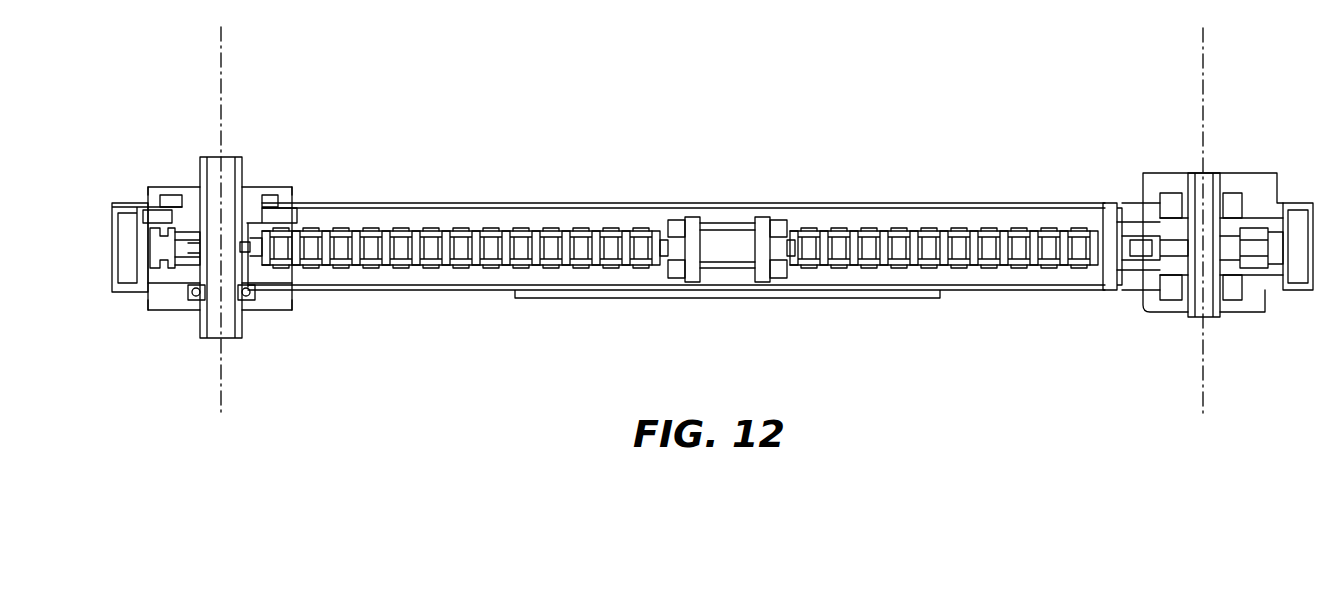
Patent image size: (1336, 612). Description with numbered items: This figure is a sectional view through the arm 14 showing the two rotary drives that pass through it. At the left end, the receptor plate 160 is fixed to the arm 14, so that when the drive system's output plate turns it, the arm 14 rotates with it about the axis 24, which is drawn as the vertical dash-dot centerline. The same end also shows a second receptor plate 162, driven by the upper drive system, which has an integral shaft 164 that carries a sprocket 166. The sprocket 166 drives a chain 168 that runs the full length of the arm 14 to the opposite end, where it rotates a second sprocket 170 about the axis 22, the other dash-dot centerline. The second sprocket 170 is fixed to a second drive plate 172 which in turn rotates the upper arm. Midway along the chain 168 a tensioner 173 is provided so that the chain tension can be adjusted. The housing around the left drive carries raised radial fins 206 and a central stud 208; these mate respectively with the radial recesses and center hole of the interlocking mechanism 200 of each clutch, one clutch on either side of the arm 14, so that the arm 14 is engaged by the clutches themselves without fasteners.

The interlocking mechanism 200 is at (350, 90).
The arm 14 is at (807, 202).
The chain 168 is at (440, 237).
The tensioner 173 is at (733, 243).
The receptor plate 160 is at (258, 310).
The raised radial fins 206 is at (158, 185).
The stud 208 is at (237, 157).
The receptor plate 162 is at (180, 185).
The shaft 164 is at (202, 273).
The sprocket 166 is at (178, 247).
The axis 24 is at (222, 387).
The axis 22 is at (1202, 95).
The second drive plate 172 is at (1217, 173).
The second sprocket 170 is at (1237, 245).